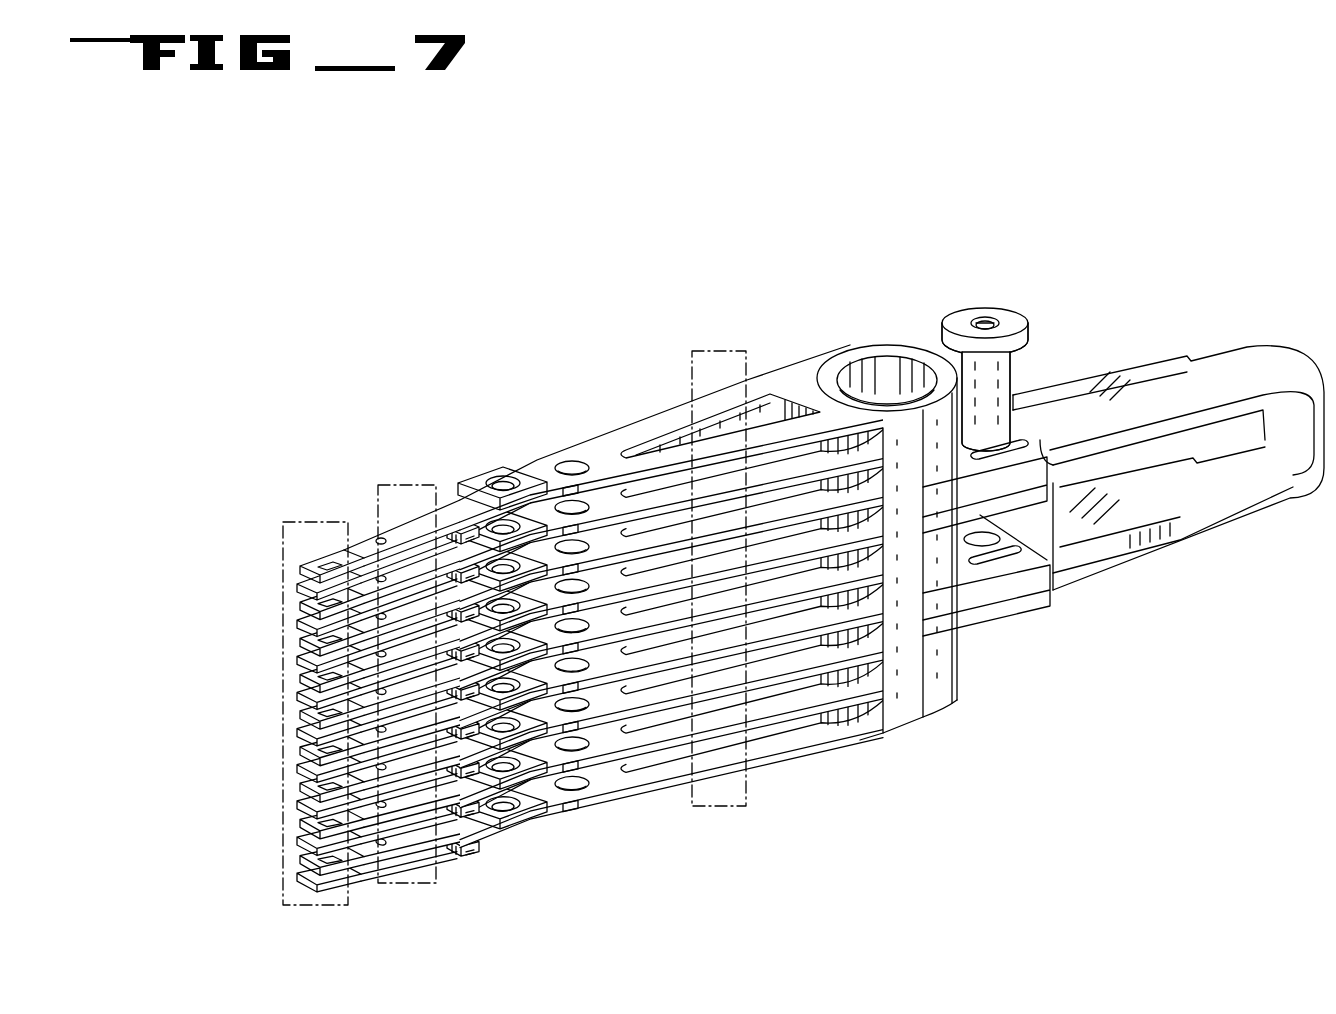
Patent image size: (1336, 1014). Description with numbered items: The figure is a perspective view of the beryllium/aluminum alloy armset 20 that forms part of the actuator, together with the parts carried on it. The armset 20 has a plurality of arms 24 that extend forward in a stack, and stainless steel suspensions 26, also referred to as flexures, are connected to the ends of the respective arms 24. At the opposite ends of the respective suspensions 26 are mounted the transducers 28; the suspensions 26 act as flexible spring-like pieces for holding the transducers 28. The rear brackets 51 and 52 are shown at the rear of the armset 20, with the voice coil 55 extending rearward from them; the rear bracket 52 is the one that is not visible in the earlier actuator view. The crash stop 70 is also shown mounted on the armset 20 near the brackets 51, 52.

The armset 20 is at (800, 370).
The arms 24 is at (728, 351).
The suspensions 26 is at (406, 485).
The transducers 28 is at (330, 522).
The rear bracket 51 is at (966, 514).
The rear bracket 52 is at (962, 621).
The voice coil 55 is at (1240, 365).
The crash stop 70 is at (1005, 322).